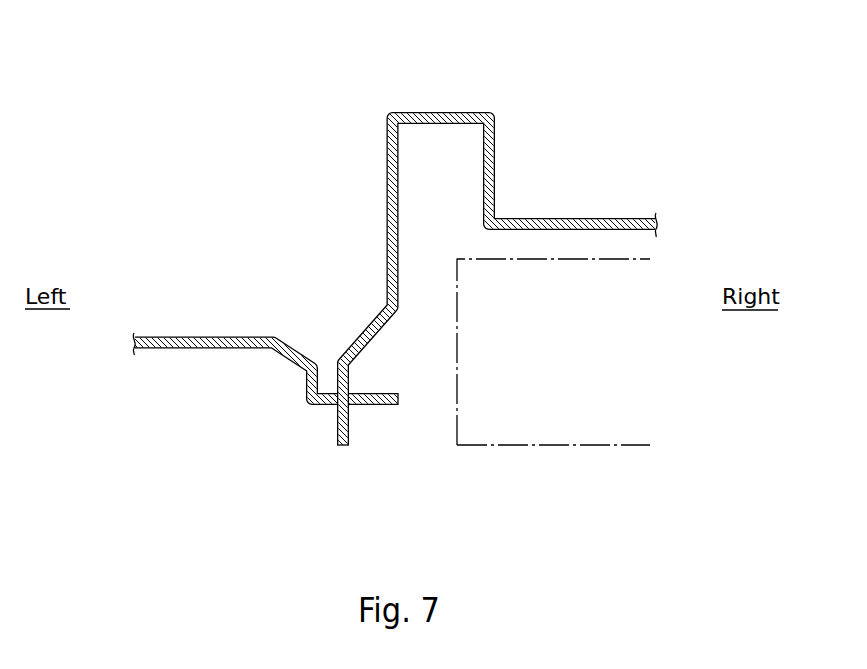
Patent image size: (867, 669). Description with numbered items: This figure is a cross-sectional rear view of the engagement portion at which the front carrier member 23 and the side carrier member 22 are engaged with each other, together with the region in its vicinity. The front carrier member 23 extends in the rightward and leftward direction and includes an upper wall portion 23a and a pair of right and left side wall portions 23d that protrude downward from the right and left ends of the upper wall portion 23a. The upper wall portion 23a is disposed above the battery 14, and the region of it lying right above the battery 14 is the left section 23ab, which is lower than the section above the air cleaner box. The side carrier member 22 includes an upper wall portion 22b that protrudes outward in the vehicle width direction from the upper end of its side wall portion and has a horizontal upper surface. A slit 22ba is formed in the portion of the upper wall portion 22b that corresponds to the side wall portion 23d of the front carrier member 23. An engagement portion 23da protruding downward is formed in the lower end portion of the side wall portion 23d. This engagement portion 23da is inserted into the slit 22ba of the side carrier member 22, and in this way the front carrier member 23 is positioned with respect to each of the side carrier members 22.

The battery 14 is at (593, 446).
The side carrier member 22 is at (265, 313).
The upper wall portion 22b is at (221, 337).
The slit 22ba is at (333, 393).
The front carrier member 23 is at (473, 276).
The upper wall portion 23a is at (477, 113).
The left section 23ab is at (573, 218).
The side wall portion 23d is at (386, 222).
The engagement portion 23da is at (348, 425).